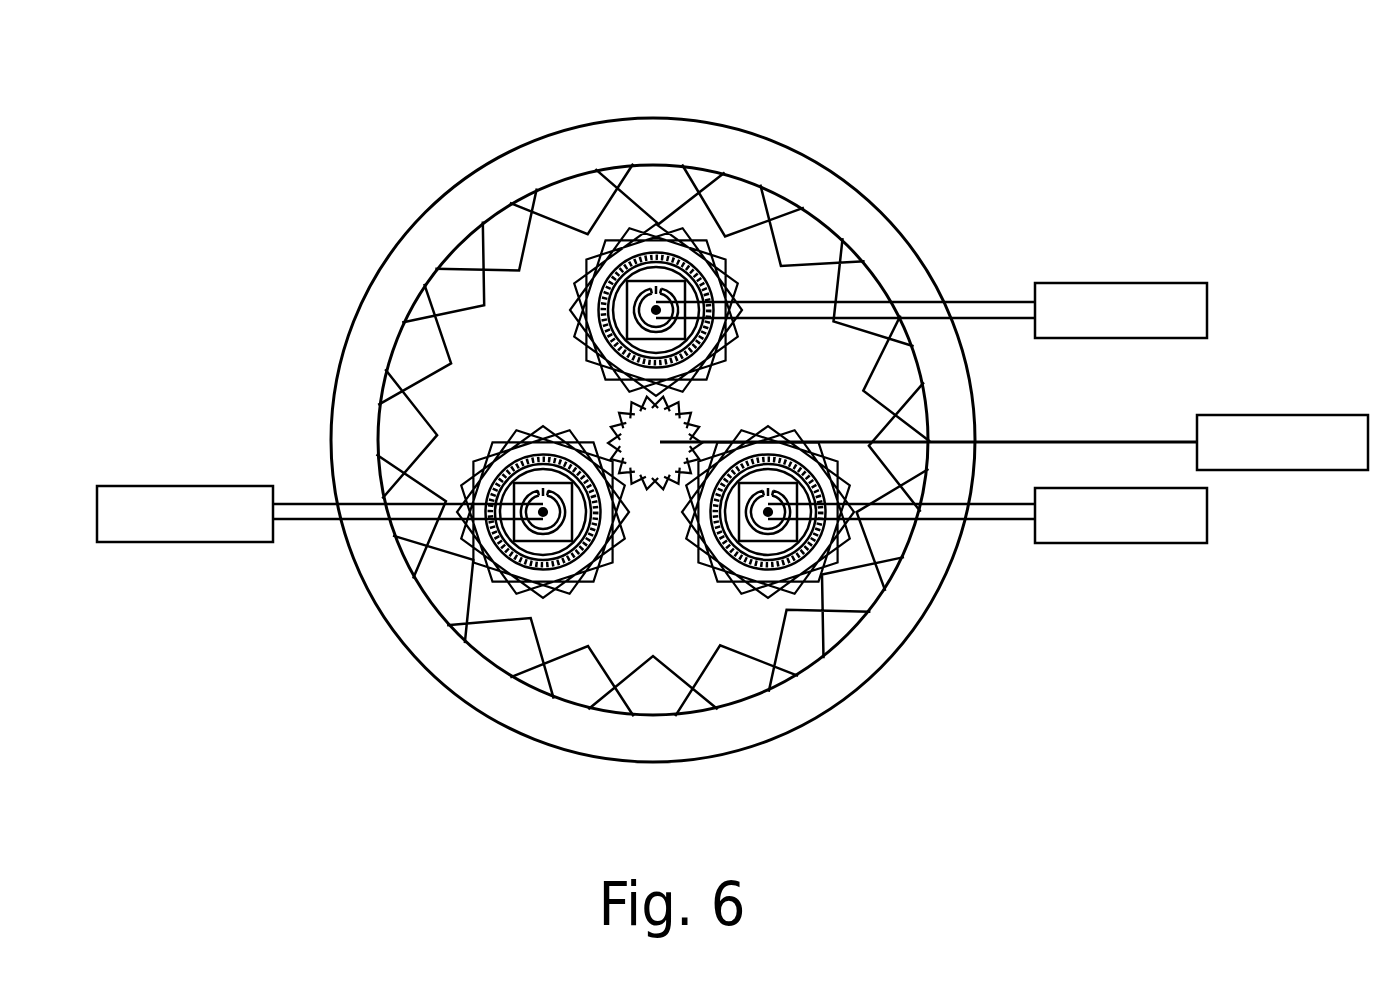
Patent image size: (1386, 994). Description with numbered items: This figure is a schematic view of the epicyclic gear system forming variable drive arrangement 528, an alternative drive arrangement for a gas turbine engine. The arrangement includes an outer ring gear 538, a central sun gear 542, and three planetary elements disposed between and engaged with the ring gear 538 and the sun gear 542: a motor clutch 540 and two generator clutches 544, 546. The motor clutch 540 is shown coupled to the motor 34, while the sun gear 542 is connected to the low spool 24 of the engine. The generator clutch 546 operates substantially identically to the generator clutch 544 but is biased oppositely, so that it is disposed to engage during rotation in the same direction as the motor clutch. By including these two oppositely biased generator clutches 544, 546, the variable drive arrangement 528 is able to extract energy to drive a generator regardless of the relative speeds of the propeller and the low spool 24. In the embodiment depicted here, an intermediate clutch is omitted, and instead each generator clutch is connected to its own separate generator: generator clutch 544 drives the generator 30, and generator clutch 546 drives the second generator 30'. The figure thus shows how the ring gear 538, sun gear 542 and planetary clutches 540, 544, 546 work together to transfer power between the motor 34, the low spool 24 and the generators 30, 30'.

The variable drive arrangement 528 is at (893, 130).
The ring gear 538 is at (572, 728).
The motor clutch 540 is at (658, 273).
The sun gear 542 is at (642, 448).
The generator clutch 544 is at (770, 548).
The generator clutch 546 is at (530, 542).
The motor 34 is at (1190, 324).
The low spool 24 is at (1355, 454).
The generator 30 is at (987, 515).
The generator 30' is at (320, 514).